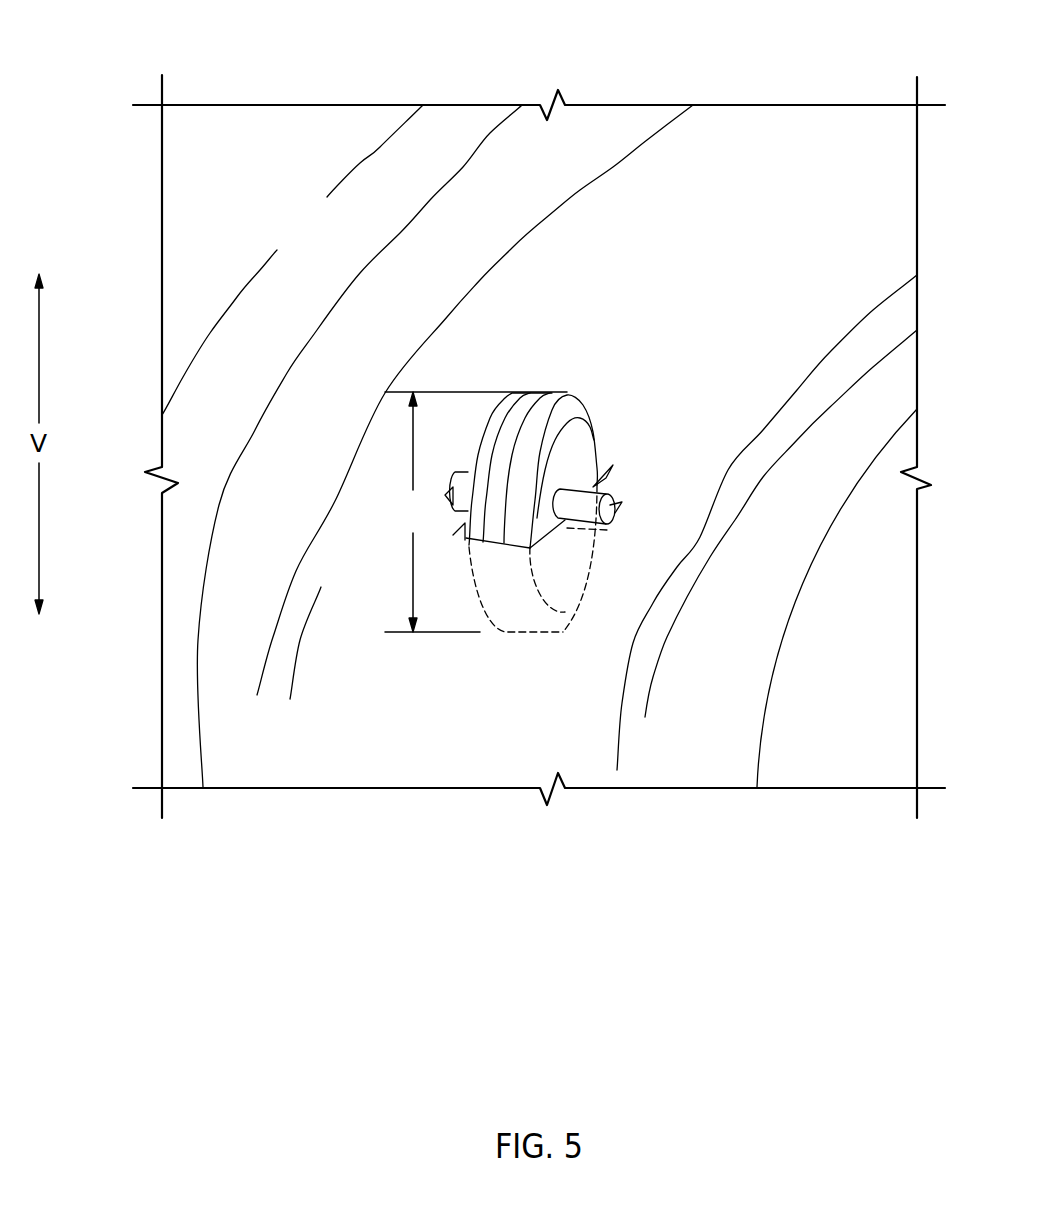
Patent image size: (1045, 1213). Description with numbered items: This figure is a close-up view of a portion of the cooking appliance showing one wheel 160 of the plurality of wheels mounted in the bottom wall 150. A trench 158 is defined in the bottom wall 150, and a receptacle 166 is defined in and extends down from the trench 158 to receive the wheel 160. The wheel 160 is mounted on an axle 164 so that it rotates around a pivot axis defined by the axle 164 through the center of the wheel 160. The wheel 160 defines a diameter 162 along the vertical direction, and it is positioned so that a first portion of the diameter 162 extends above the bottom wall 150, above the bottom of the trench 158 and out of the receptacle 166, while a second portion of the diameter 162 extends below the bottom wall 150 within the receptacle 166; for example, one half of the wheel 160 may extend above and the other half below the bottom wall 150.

The bottom wall 150 is at (235, 167).
The trench 158 is at (796, 152).
The wheel 160 is at (614, 453).
The diameter 162 is at (476, 512).
The axle 164 is at (587, 503).
The receptacle 166 is at (614, 505).